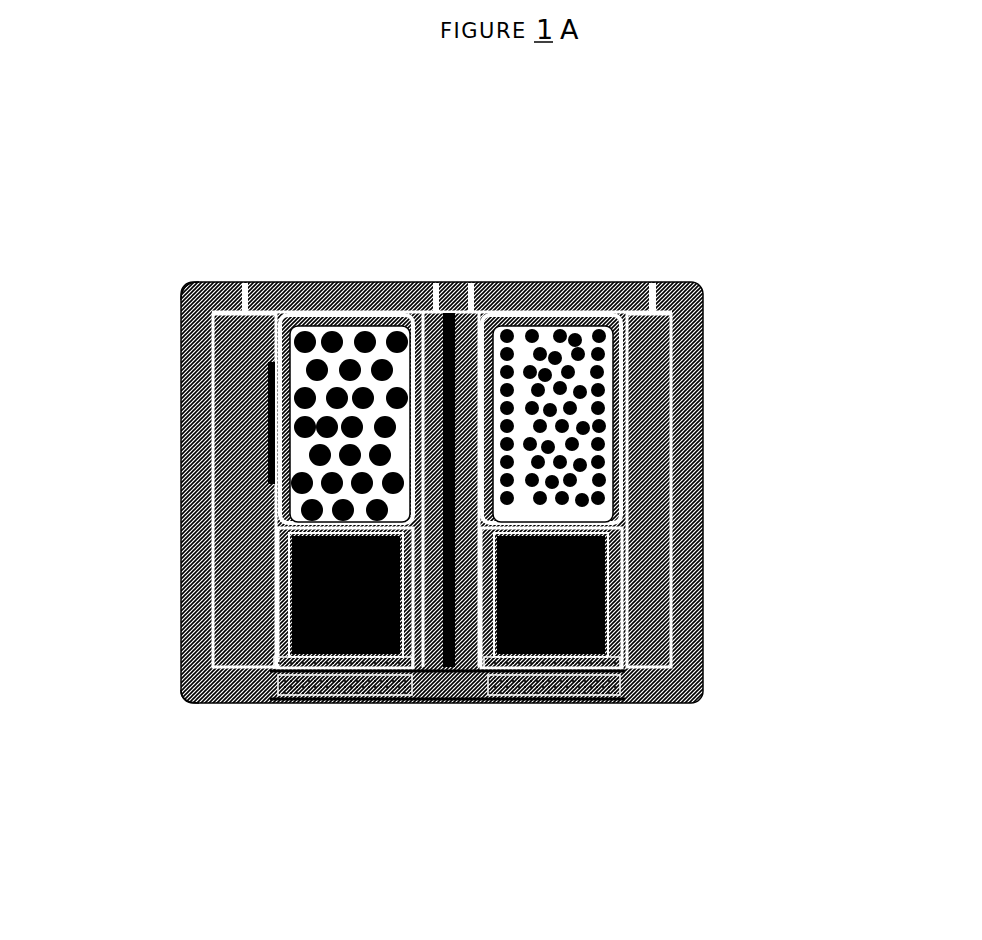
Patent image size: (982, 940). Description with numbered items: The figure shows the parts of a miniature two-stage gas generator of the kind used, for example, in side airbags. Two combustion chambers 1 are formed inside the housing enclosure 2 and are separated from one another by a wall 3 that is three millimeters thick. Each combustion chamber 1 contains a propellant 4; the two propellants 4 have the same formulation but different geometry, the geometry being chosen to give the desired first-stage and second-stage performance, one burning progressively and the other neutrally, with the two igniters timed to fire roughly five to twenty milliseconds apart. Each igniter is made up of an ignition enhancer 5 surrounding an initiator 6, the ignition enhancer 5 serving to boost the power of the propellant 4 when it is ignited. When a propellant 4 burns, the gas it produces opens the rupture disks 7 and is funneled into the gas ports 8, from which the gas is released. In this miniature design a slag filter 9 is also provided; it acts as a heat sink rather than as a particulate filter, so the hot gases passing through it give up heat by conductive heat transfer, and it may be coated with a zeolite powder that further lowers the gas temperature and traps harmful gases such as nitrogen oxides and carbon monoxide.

The combustion chamber 1 is at (288, 419).
The housing enclosure 2 is at (707, 458).
The wall 3 is at (474, 284).
The propellant 4 is at (290, 422).
The ignition enhancer 5 is at (697, 663).
The initiator 6 is at (597, 704).
The rupture disk 7 is at (194, 280).
The gas port 8 is at (667, 284).
The slag filter 9 is at (215, 395).